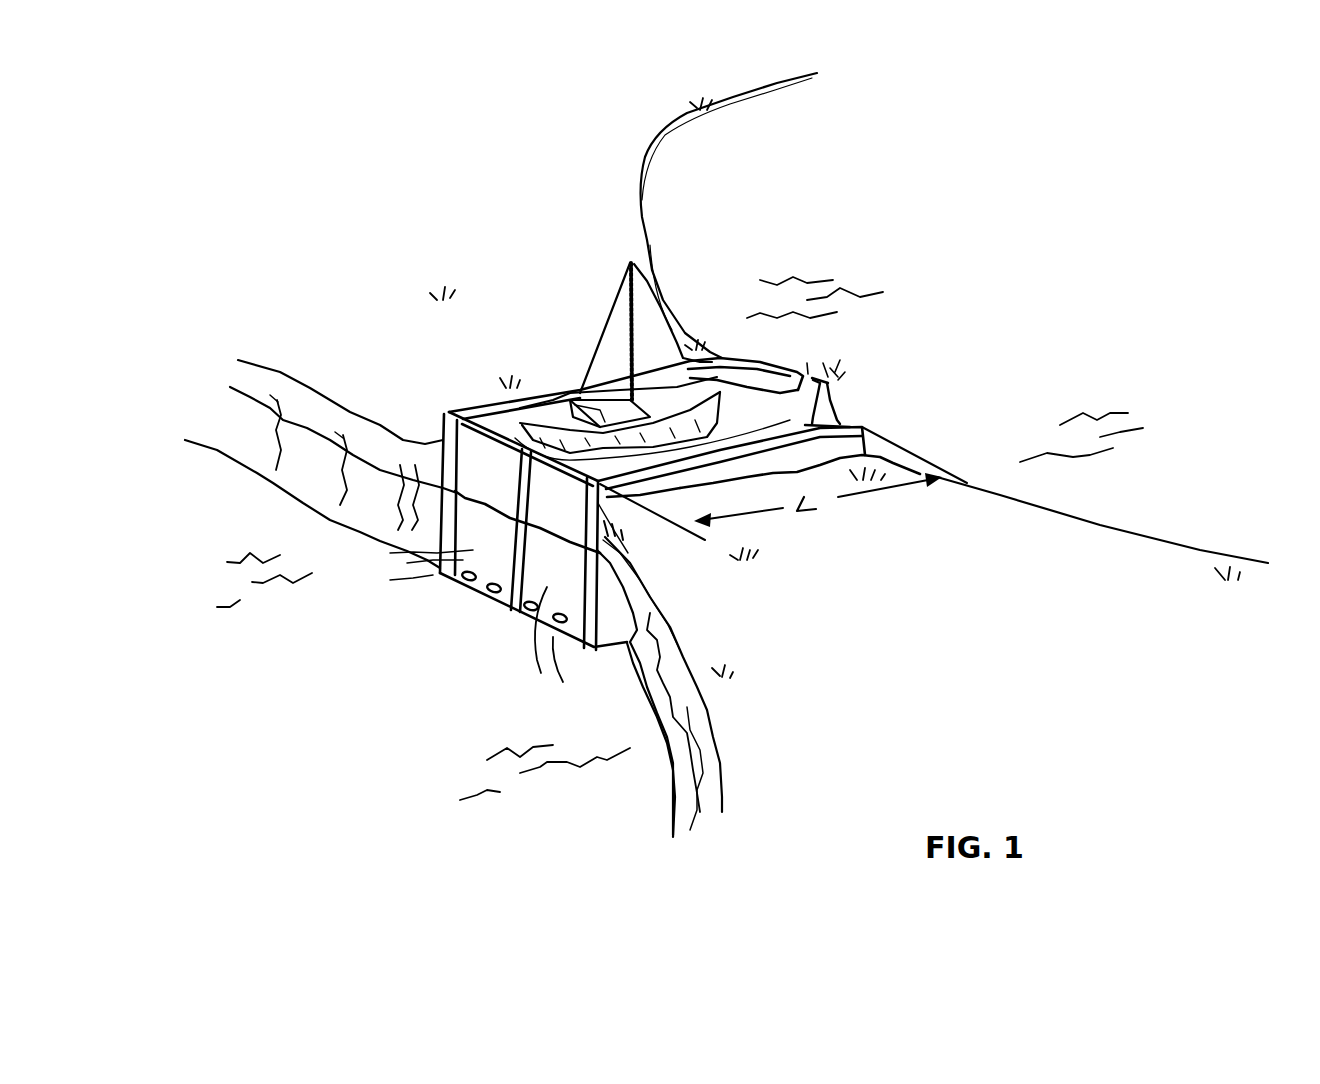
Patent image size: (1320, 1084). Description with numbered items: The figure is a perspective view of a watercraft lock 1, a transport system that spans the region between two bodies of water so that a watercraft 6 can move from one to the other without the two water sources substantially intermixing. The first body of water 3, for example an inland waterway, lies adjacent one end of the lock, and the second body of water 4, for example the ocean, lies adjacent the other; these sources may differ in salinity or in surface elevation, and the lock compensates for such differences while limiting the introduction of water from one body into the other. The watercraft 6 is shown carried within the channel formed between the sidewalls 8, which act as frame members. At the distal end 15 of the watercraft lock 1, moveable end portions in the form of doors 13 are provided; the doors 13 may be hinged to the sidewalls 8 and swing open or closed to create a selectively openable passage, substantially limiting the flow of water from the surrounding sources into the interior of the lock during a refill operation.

The watercraft lock 1 is at (452, 373).
The first body of water 3 is at (278, 707).
The second body of water 4 is at (1032, 254).
The watercraft 6 is at (558, 423).
The sidewalls 8 is at (443, 437).
The doors 13 is at (764, 370).
The distal end 15 is at (493, 648).